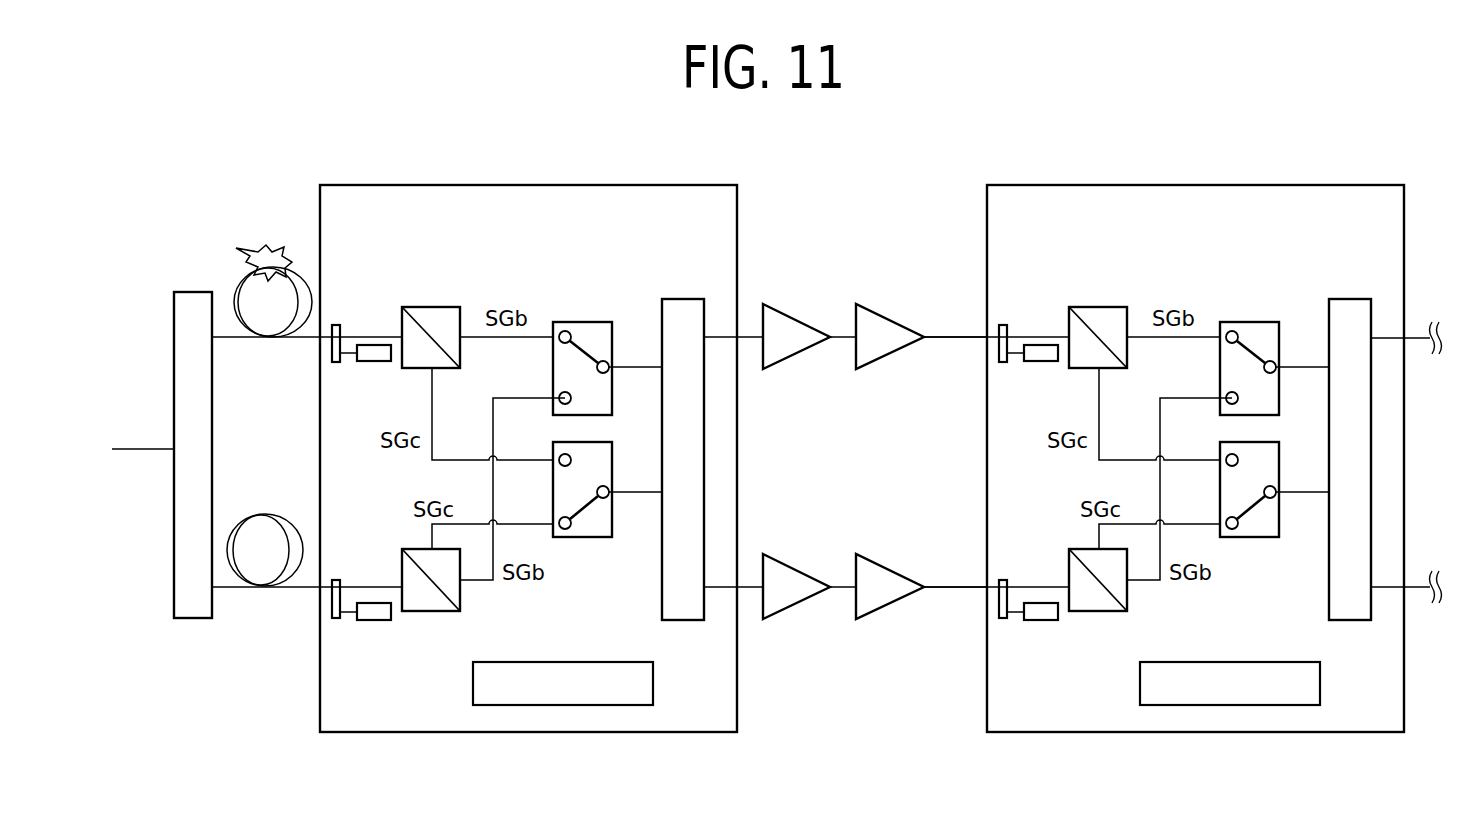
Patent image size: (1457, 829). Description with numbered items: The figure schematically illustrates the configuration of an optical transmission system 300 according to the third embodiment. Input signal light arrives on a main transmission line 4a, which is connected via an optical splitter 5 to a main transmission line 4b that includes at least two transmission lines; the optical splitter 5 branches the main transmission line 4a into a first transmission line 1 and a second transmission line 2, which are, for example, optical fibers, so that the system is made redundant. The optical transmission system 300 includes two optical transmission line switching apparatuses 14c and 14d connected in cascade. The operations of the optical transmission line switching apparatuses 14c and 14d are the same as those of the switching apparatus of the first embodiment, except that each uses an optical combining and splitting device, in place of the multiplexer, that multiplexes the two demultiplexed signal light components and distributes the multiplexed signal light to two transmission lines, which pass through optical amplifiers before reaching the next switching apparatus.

The optical transmission system 300 is at (280, 118).
The transmission line 1 is at (266, 340).
The transmission line 2 is at (266, 588).
The main transmission line 4a is at (133, 455).
The main transmission line 4b is at (312, 250).
The optical splitter 5 is at (191, 620).
The optical transmission line switching apparatus 14c is at (372, 183).
The optical transmission line switching apparatus 14d is at (1038, 183).